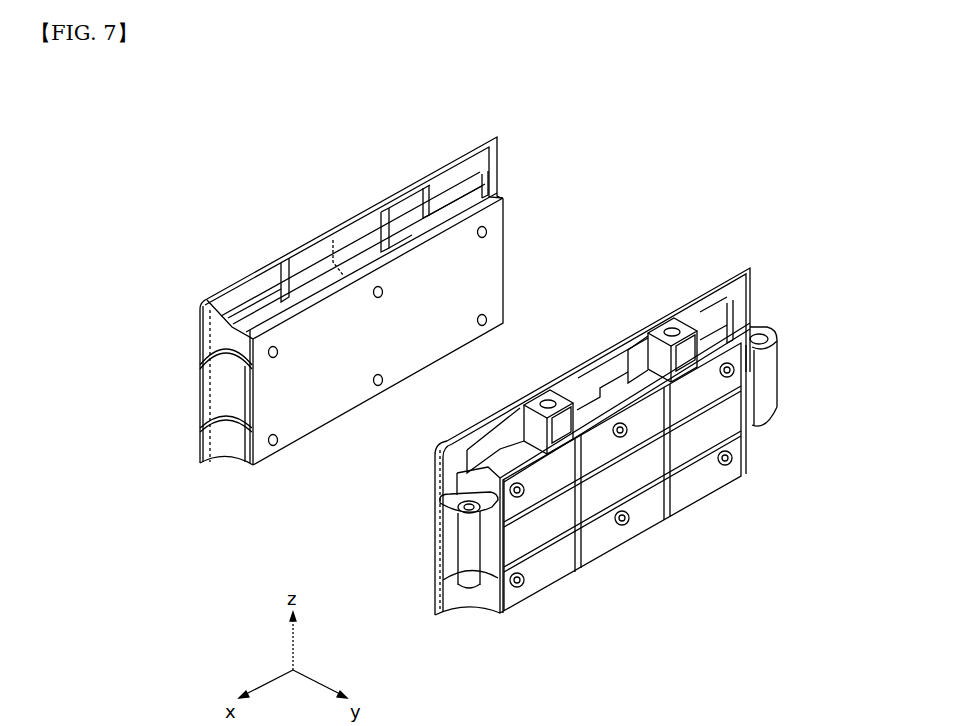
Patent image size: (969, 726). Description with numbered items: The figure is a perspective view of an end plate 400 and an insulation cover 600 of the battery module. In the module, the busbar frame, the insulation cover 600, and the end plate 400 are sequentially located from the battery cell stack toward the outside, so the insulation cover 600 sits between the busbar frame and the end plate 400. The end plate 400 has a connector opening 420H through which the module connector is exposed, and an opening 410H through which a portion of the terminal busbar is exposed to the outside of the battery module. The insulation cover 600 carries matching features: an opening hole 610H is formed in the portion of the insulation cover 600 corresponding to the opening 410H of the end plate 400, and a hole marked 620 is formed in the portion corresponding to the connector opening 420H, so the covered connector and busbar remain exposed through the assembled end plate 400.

The end plate 400 is at (645, 512).
The opening 410H is at (498, 447).
The connector opening 420H is at (598, 378).
The insulation cover 600 is at (510, 238).
The opening hole 610H is at (266, 300).
The partition block of upper frame member 620 is at (363, 252).